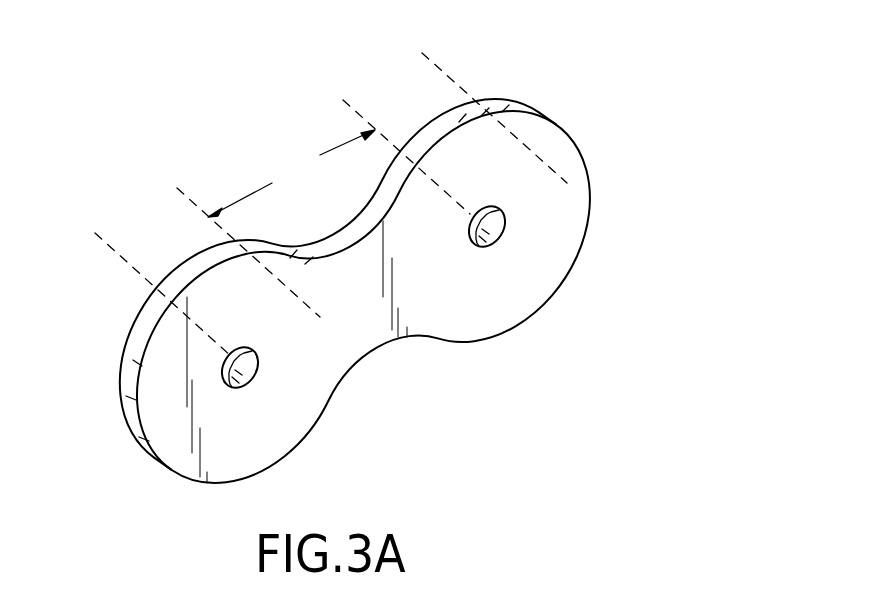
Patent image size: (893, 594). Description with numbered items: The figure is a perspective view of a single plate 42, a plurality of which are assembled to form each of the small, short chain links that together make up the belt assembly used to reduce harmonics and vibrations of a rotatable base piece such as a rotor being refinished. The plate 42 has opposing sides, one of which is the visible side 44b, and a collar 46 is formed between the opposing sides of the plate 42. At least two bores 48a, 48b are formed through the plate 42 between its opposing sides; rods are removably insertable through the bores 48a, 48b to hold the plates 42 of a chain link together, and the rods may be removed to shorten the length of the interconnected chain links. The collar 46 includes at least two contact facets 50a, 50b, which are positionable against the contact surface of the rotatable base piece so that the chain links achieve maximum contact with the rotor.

The plate 42 is at (298, 220).
The opposing side 44b is at (260, 452).
The collar 46 is at (130, 377).
The bore 48a is at (492, 230).
The bore 48b is at (250, 368).
The contact facet 50a is at (128, 263).
The contact facet 50b is at (452, 82).